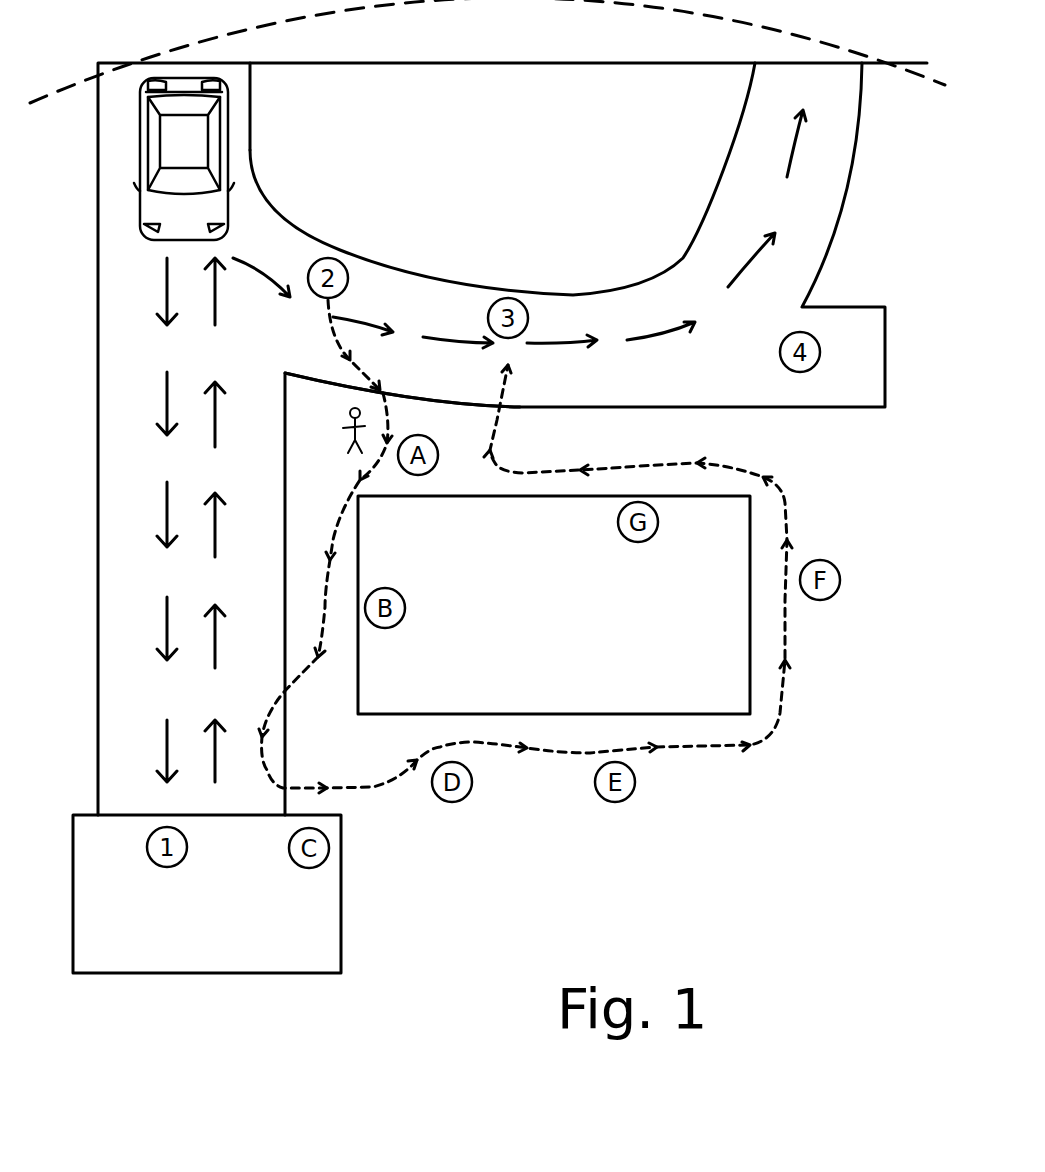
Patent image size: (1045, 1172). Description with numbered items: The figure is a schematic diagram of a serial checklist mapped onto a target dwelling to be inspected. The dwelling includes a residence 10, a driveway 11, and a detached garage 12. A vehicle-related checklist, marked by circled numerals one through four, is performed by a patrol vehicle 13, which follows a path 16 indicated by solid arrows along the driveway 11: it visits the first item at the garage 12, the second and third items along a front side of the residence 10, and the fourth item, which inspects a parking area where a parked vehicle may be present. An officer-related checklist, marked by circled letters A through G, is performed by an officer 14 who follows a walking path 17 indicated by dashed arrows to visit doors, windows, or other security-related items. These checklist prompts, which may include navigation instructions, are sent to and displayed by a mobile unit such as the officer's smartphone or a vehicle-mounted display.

The residence 10 is at (395, 715).
The driveway 11 is at (383, 263).
The detached garage 12 is at (341, 927).
The patrol vehicle 13 is at (218, 152).
The officer 14 is at (345, 427).
The path 16 is at (160, 390).
The walking path 17 is at (383, 393).